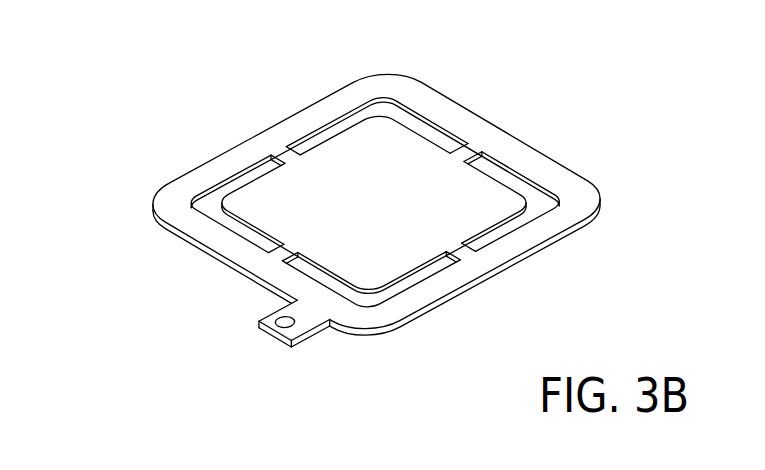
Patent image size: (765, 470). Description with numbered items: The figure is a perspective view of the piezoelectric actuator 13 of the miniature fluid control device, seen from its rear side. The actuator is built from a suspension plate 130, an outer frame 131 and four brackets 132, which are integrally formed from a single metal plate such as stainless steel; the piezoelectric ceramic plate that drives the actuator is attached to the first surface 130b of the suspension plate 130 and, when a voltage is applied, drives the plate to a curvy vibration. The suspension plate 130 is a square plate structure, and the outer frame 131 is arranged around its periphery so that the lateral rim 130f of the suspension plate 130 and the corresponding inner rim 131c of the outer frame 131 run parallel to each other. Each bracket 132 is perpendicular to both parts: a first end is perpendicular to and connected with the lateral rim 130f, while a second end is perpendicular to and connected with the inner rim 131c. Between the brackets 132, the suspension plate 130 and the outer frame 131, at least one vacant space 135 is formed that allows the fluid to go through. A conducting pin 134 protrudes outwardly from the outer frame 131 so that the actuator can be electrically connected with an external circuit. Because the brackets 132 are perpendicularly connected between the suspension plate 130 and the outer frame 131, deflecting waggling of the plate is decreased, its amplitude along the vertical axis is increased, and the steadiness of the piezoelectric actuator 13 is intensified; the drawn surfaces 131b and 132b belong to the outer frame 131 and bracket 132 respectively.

The piezoelectric actuator 13 is at (82, 63).
The suspension plate 130 is at (434, 264).
The first surface 130b is at (392, 290).
The lateral rim 130f is at (514, 198).
The outer frame 131 is at (421, 230).
The top surface of frame 131b is at (581, 205).
The inner rim 131c is at (519, 194).
The bracket 132 is at (357, 186).
The side surface of connecting bridge 132b is at (495, 104).
The conducting pin 134 is at (308, 321).
The vacant space 135 is at (377, 110).